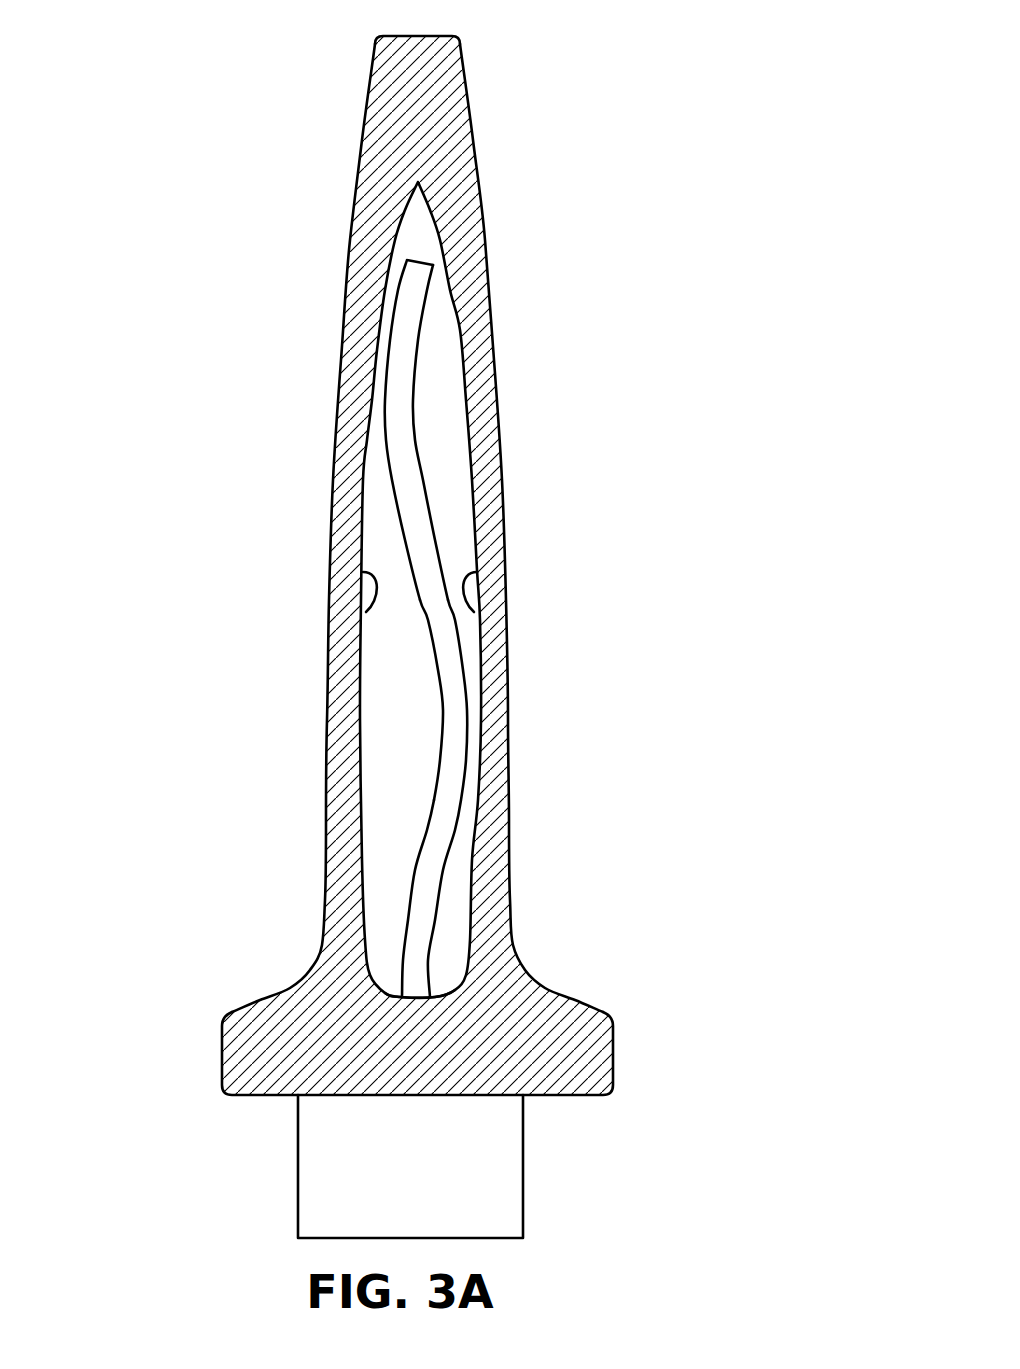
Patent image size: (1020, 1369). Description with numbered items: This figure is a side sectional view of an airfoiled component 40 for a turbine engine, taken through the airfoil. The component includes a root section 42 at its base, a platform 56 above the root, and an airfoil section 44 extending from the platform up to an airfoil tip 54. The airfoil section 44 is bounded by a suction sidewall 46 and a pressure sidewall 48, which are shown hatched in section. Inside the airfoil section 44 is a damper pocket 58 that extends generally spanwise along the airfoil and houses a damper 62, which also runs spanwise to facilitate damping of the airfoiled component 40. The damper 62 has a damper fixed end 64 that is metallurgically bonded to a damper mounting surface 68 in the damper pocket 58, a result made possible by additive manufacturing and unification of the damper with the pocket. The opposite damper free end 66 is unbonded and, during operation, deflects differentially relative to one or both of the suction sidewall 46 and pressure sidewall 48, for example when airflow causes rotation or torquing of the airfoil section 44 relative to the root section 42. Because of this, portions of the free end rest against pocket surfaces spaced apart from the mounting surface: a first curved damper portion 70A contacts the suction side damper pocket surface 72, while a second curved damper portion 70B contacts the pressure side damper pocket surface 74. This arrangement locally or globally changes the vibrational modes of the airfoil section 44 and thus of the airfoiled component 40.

The airfoiled component 40 is at (434, 628).
The root section 42 is at (205, 1187).
The airfoil section 44 is at (339, 524).
The suction sidewall 46 is at (327, 663).
The pressure sidewall 48 is at (507, 745).
The airfoil tip 54 is at (545, 133).
The platform 56 is at (141, 1045).
The damper pocket 58 is at (378, 870).
The damper 62 is at (411, 811).
The damper fixed end 64 is at (415, 962).
The damper free end 66 is at (448, 439).
The damper mounting surface 68 is at (398, 994).
The first curved damper portion 70A is at (405, 365).
The second curved damper portion 70B is at (445, 710).
The suction side damper pocket surface 72 is at (363, 575).
The pressure side damper pocket surface 74 is at (477, 573).